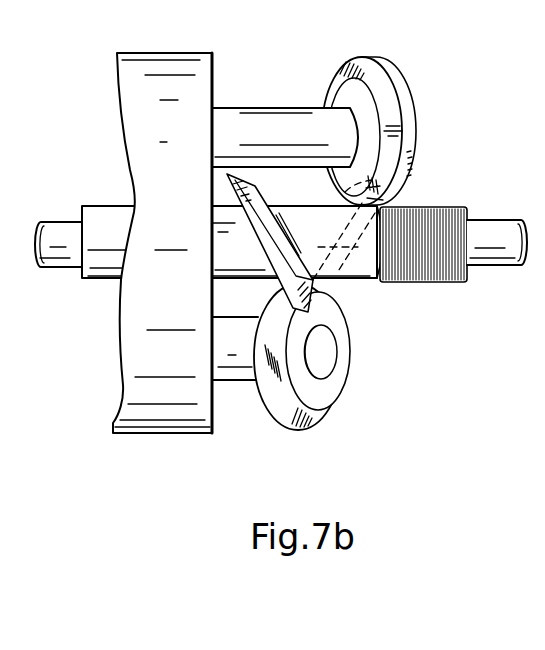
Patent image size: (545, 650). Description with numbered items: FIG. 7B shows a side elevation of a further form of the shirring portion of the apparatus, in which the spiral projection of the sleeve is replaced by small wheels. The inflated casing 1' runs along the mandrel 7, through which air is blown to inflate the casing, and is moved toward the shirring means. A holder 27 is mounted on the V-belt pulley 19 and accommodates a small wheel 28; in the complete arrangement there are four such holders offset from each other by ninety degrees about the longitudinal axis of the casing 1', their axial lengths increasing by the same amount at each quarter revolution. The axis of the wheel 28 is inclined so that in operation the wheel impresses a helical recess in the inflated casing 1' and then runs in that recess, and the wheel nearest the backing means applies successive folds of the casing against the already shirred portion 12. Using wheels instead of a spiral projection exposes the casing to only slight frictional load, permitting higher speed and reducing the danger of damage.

The V-belt pulley 19 is at (148, 62).
The holder 27 is at (270, 118).
The small wheel 28 is at (388, 83).
The inflated casing 1' is at (206, 213).
The shirred portion of the casing 12 is at (455, 210).
The mandrel 7 is at (497, 265).